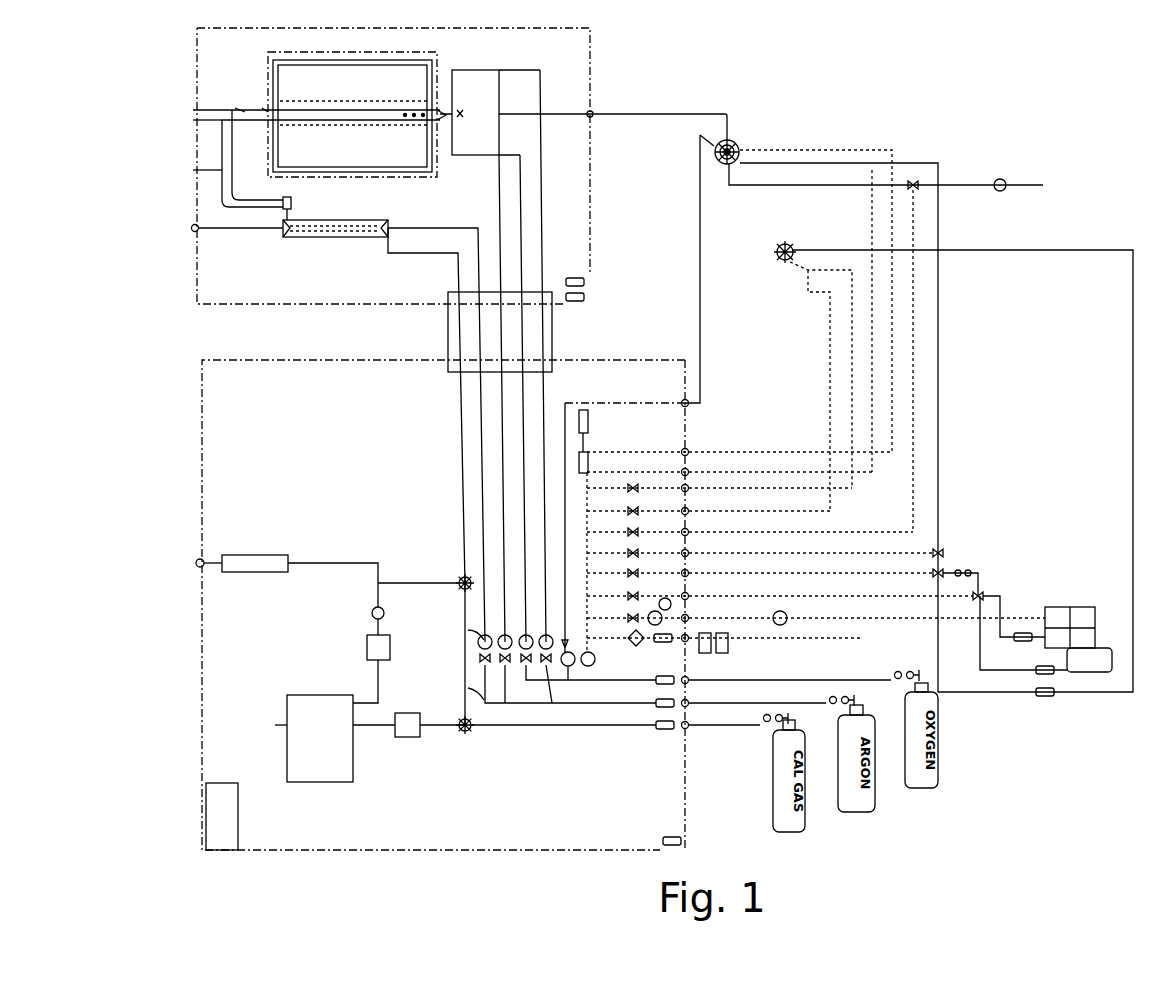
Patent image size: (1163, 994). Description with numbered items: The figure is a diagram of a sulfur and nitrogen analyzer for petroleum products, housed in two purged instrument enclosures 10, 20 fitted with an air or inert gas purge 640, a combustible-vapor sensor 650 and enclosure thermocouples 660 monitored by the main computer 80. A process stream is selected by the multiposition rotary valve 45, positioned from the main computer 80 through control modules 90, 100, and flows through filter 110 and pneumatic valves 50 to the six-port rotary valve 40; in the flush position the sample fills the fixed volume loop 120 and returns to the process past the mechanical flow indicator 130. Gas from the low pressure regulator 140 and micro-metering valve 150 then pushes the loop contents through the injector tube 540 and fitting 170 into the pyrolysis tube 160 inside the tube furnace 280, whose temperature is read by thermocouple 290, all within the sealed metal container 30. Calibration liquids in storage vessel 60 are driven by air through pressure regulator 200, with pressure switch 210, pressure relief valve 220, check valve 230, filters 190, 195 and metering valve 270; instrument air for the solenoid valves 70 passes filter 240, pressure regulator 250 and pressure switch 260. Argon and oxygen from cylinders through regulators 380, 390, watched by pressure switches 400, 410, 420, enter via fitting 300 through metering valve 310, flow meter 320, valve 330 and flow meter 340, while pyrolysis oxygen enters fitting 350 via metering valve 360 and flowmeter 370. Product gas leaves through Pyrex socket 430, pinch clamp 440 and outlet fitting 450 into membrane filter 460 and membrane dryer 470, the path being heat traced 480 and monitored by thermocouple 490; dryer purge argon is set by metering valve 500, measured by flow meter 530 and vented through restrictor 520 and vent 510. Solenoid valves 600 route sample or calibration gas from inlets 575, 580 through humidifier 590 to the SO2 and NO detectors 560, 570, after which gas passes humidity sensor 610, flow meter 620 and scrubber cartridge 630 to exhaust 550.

The instrument enclosure 10 is at (298, 306).
The instrument enclosure 20 is at (270, 852).
The sealed metal container 30 is at (432, 178).
The rotary valve 40 is at (725, 166).
The multiposition rotary valve 45 is at (776, 252).
The pneumatic valves 50 is at (918, 190).
The storage vessel 60 is at (1072, 660).
The solenoid valves 70 is at (640, 532).
The main computer 80 is at (267, 726).
The control module 90 is at (590, 417).
The control module 100 is at (592, 455).
The filter 110 is at (1050, 696).
The fixed volume loop 120 is at (729, 122).
The mechanical flow indicator 130 is at (1000, 191).
The low pressure regulator 140 is at (572, 675).
The micro-metering valve 150 is at (570, 628).
The pyrolysis tube 160 is at (353, 100).
The fitting 170 is at (480, 103).
The filter 190 is at (1022, 645).
The filter 195 is at (1050, 675).
The pressure regulator 200 is at (668, 624).
The pressure switch 210 is at (671, 604).
The pressure relief valve 220 is at (1062, 600).
The check valve 230 is at (781, 610).
The filter 240 is at (665, 642).
The pressure regulator 250 is at (636, 646).
The pressure switch 260 is at (592, 664).
The metering valve 270 is at (965, 570).
The tube furnace 280 is at (352, 172).
The thermocouple 290 is at (400, 108).
The fitting 300 is at (583, 112).
The metering valve 310 is at (505, 700).
The flow meter 320 is at (503, 640).
The valve 330 is at (550, 690).
The flow meter 340 is at (546, 635).
The fitting 350 is at (482, 145).
The metering valve 360 is at (528, 690).
The flowmeter 370 is at (526, 635).
The two-stage pressure regulator 380 is at (825, 694).
The two-stage pressure regulator 390 is at (892, 670).
The pneumatic pressure switch 400 is at (923, 680).
The pneumatic pressure switch 410 is at (865, 705).
The pneumatic pressure switch 420 is at (758, 717).
The Pyrex socket 430 is at (196, 110).
The pinch clamp 440 is at (237, 108).
The outlet fitting 450 is at (191, 124).
The membrane filter 460 is at (188, 170).
The membrane dryer 470 is at (318, 240).
The heat trace element 480 is at (255, 198).
The thermocouple 490 is at (268, 108).
The metering valve 500 is at (459, 689).
The vent 510 is at (192, 226).
The flow restrictor 520 is at (284, 209).
The flow meter 530 is at (461, 629).
The injector tube 540 is at (672, 113).
The exhaust 550 is at (195, 573).
The SO2 detector 560 is at (325, 775).
The NO detector 570 is at (325, 801).
The calibration gas inlet 575 is at (690, 730).
The calibration gas inlet 580 is at (665, 730).
The humidifier 590 is at (504, 737).
The solenoid valves 600 is at (462, 590).
The relative humidity sensor 610 is at (392, 647).
The flow meter 620 is at (386, 613).
The scrubber cartridge 630 is at (240, 573).
The purge 640 is at (222, 816).
The combustible vapor sensor 650 is at (585, 282).
The thermocouples 660 is at (585, 297).